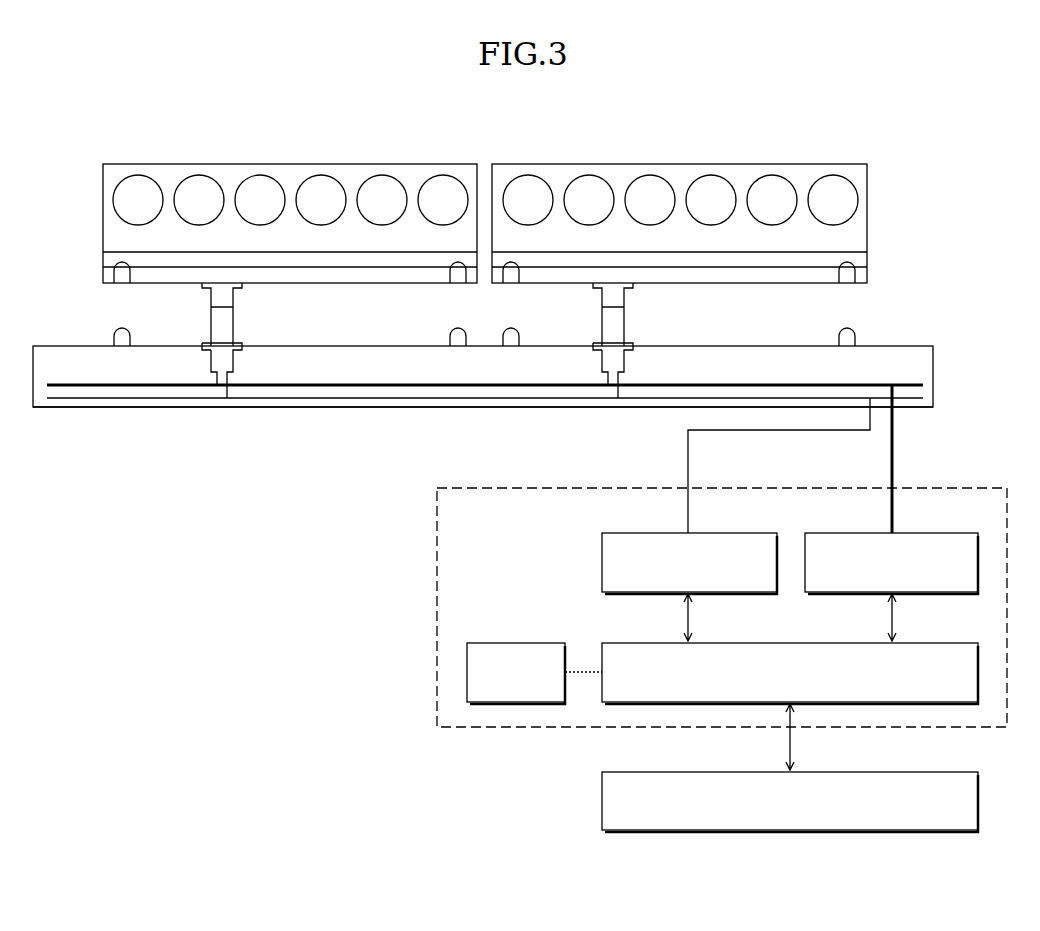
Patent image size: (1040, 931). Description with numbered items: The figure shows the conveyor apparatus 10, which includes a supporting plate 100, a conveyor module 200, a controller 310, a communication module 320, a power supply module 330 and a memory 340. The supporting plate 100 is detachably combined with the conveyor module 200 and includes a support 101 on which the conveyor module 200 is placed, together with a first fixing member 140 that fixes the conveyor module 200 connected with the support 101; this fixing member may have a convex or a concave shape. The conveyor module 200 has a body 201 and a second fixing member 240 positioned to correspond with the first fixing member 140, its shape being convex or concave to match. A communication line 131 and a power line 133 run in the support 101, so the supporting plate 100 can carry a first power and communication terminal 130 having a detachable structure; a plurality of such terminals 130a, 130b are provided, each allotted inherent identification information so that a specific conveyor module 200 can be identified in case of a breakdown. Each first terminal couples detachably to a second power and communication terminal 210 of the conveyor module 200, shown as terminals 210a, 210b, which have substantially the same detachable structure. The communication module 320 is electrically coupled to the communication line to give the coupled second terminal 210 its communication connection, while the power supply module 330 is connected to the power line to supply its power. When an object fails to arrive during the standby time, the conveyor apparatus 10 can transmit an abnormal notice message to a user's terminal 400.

The conveyor apparatus 10 is at (60, 111).
The supporting plate 100 is at (518, 381).
The support 101 is at (934, 398).
The first power and communication terminal 130 is at (431, 381).
The first power and communication terminal 130a is at (232, 360).
The first power and communication terminal 130b is at (627, 362).
The communication line 131 is at (66, 408).
The power line 133 is at (120, 399).
The first fixing member 140 is at (115, 338).
The conveyor module 200 is at (485, 202).
The body 201 is at (857, 165).
The second power and communication terminal 210 is at (485, 197).
The second power and communication terminal 210a is at (230, 297).
The second power and communication terminal 210b is at (679, 217).
The second fixing member 240 is at (120, 263).
The controller 310 is at (968, 636).
The communication module 320 is at (755, 533).
The power supply module 330 is at (968, 526).
The memory 340 is at (553, 636).
The user's terminal 400 is at (968, 766).